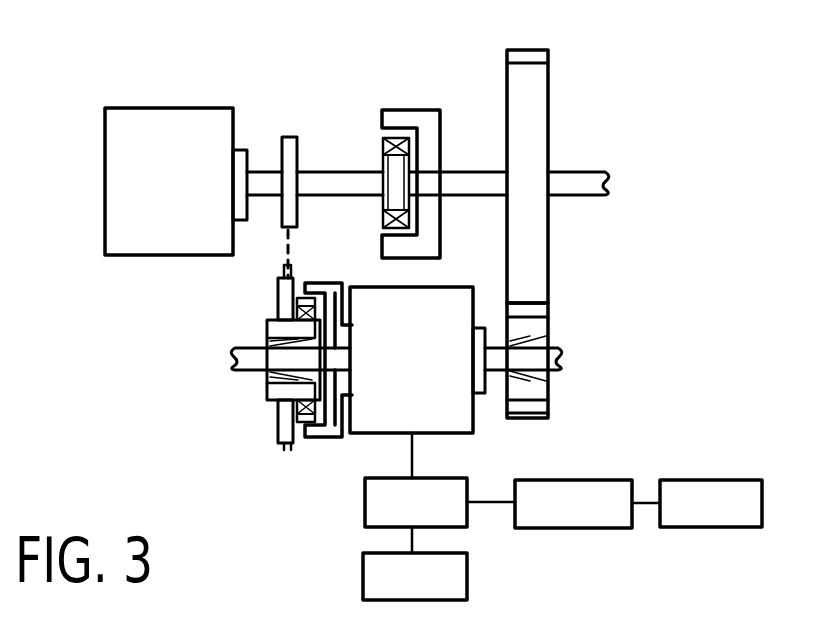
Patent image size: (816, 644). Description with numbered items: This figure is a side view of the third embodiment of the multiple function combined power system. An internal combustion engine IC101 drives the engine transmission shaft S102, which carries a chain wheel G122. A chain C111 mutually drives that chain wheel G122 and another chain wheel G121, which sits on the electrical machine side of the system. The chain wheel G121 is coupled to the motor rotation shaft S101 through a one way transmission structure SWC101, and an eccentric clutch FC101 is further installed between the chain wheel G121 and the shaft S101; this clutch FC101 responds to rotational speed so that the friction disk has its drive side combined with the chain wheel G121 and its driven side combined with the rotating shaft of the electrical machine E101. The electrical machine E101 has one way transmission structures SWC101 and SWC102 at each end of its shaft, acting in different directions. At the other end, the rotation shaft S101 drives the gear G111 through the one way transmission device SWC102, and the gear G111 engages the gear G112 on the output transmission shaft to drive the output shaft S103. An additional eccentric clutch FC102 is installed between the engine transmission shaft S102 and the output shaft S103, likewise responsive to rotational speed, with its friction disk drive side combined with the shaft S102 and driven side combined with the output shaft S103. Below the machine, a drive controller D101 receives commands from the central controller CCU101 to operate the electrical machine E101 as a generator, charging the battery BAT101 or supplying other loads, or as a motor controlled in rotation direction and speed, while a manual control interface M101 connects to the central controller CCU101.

The internal combustion engine IC101 is at (152, 133).
The engine transmission shaft S102 is at (335, 176).
The chain wheel G122 is at (290, 142).
The chain C111 is at (290, 253).
The eccentric clutch FC102 is at (403, 107).
The gear G112 is at (527, 58).
The output shaft S103 is at (575, 181).
The rotation shaft S101 is at (250, 373).
The chain wheel G121 is at (283, 452).
The one way transmission structure SWC101 is at (261, 338).
The eccentric clutch FC101 is at (325, 447).
The electrical machine E101 is at (447, 420).
The gear G111 is at (548, 410).
The one way transmission device SWC102 is at (549, 340).
The drive controller D101 is at (440, 493).
The battery BAT101 is at (415, 576).
The central controller CCU101 is at (587, 504).
The manual control interface M101 is at (711, 503).